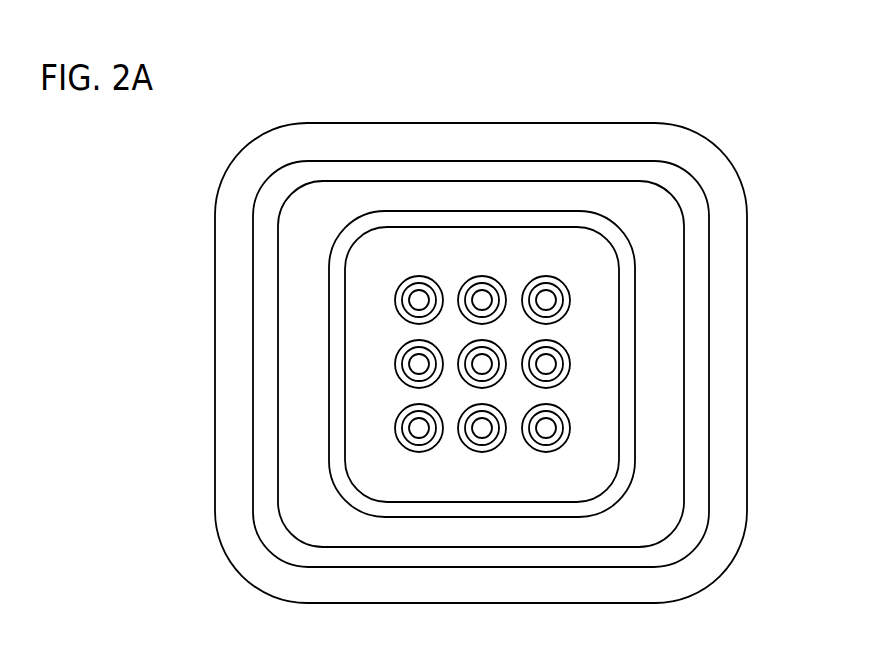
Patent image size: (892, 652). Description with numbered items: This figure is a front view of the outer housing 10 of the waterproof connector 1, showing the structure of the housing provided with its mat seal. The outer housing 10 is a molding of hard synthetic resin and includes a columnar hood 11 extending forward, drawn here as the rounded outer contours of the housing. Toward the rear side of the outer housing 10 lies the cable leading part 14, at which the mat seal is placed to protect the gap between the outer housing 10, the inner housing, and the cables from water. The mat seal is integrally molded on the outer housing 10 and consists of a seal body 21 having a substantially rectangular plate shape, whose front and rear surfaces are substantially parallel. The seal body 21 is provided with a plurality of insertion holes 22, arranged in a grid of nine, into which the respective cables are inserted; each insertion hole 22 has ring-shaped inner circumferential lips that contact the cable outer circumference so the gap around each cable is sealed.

The waterproof connector 1 is at (422, 110).
The outer housing 10 is at (658, 122).
The hood 11 is at (318, 126).
The cable leading part 14 is at (695, 474).
The seal body 21 is at (608, 330).
The insertion holes 22 is at (568, 293).